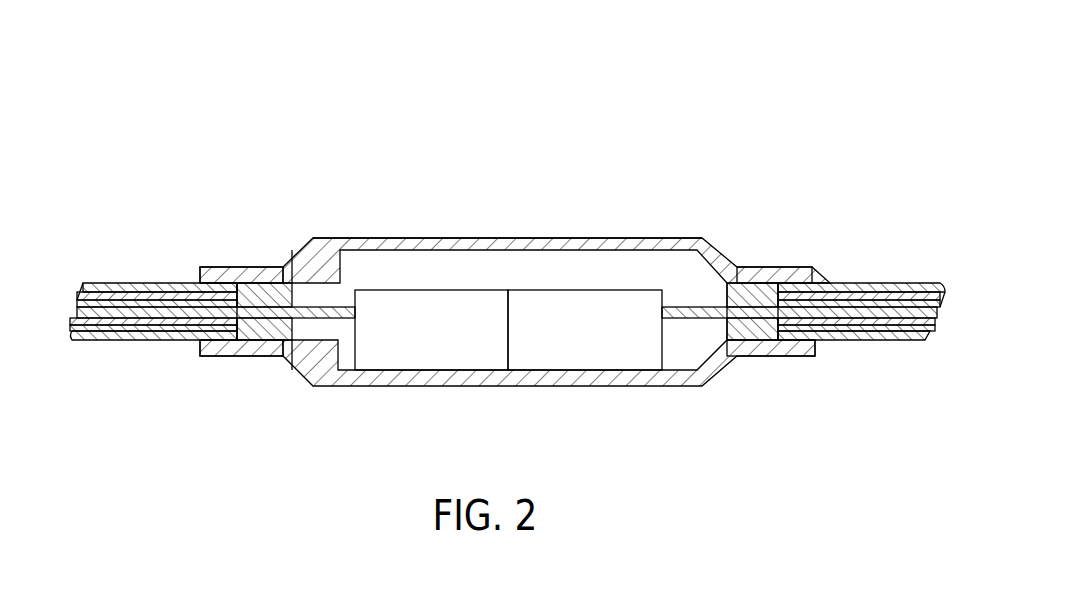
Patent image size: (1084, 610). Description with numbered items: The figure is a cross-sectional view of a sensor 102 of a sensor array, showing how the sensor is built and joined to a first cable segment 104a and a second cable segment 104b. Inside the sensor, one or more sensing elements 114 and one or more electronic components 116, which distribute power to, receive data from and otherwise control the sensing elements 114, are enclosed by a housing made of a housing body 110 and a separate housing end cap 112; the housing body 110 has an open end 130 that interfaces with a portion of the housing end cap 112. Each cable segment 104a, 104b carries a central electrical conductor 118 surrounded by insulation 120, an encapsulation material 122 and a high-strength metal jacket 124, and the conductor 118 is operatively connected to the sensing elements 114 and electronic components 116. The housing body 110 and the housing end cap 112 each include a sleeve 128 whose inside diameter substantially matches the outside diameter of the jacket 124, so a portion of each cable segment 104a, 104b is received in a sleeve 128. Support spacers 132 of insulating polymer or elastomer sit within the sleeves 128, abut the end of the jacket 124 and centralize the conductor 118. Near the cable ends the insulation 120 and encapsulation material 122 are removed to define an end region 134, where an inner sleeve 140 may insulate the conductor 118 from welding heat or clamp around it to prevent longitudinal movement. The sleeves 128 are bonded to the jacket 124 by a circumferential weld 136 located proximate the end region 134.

The sensor 102 is at (735, 86).
The first cable segment 104a is at (70, 286).
The second cable segment 104b is at (951, 342).
The housing body 110 is at (513, 372).
The housing end cap 112 is at (307, 360).
The sensing elements 114 is at (420, 355).
The electronic components 116 is at (637, 358).
The central electrical conductor 118 is at (173, 314).
The insulation 120 is at (115, 331).
The encapsulation material 122 is at (80, 343).
The jacket 124 is at (128, 290).
The sleeve 128 is at (223, 354).
The open end 130 is at (365, 245).
The support spacer 132 is at (268, 331).
The end region 134 is at (207, 333).
The weld 136 is at (203, 270).
The inner sleeve 140 is at (217, 300).